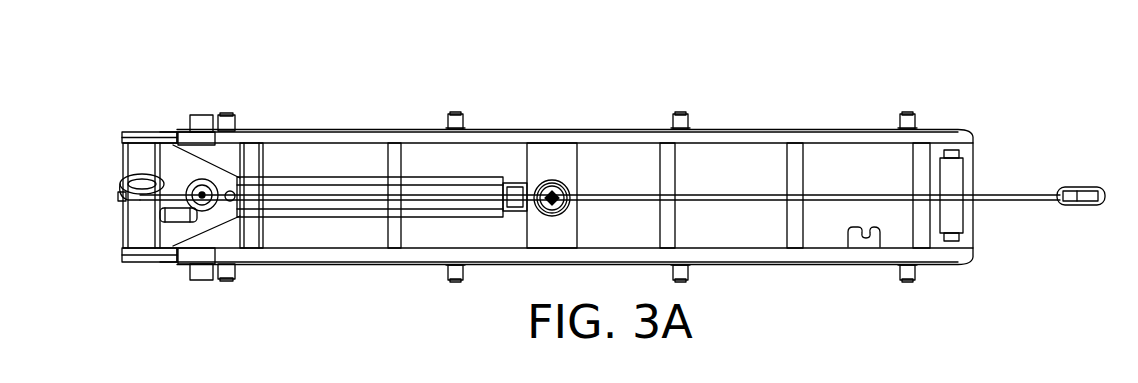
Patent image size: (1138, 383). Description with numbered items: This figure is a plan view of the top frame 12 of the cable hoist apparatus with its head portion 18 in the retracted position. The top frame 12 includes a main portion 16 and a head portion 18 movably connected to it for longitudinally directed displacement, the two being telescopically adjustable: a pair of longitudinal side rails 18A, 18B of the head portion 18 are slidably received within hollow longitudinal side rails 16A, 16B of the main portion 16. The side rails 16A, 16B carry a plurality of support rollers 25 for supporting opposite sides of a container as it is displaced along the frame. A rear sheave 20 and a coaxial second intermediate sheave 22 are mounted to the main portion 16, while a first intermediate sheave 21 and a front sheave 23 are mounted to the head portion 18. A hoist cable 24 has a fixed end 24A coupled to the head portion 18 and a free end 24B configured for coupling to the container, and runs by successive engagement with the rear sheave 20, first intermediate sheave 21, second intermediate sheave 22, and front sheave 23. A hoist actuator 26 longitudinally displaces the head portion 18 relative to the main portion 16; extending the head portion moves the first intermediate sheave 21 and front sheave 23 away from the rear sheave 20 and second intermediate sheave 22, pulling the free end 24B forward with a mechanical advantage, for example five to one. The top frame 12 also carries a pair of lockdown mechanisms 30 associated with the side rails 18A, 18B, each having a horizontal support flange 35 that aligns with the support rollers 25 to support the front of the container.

The top frame 12 is at (506, 86).
The main portion 16 is at (640, 126).
The longitudinal side rail 16A is at (395, 263).
The longitudinal side rail 16B is at (395, 141).
The head portion 18 is at (149, 127).
The longitudinal side rail 18A is at (150, 263).
The longitudinal side rail 18B is at (162, 140).
The rear sheave 20 is at (548, 182).
The second intermediate sheave 22 is at (548, 182).
The first intermediate sheave 21 is at (215, 184).
The front sheave 23 is at (122, 177).
The hoist cable 24 is at (720, 194).
The fixed end 24A is at (198, 225).
The free end 24B is at (1073, 207).
The support rollers 25 is at (234, 113).
The hoist actuator 26 is at (313, 177).
The lockdown mechanism 30 is at (205, 110).
The horizontal support flange 35 is at (208, 122).